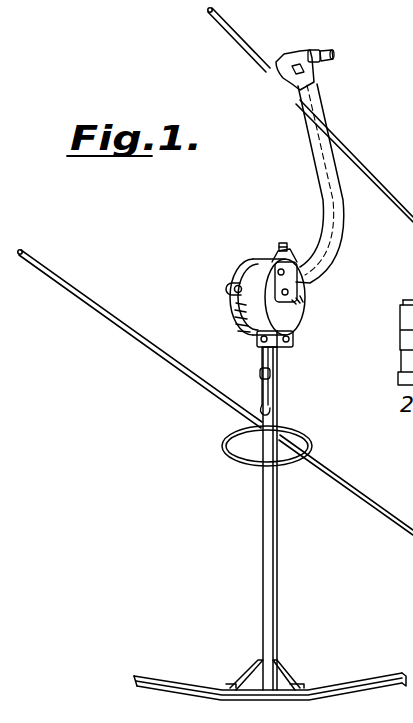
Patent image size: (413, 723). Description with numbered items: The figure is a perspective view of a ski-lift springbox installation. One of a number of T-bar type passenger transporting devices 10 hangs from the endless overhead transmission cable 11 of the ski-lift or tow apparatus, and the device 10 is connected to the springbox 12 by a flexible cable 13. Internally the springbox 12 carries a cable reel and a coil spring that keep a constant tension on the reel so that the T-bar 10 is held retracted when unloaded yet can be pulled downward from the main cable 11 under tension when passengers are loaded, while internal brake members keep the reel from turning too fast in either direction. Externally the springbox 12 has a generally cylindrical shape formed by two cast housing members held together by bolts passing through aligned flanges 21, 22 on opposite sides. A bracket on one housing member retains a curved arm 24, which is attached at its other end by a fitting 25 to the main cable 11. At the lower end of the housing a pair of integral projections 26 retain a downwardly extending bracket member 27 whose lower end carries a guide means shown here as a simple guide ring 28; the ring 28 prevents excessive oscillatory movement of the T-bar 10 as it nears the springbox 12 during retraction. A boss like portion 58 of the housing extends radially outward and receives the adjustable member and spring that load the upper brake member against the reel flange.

The passenger transporting device 10 is at (278, 590).
The transmission cable 11 is at (372, 164).
The springbox 12 is at (305, 317).
The flexible cable 13 is at (262, 366).
The flange 21 is at (402, 334).
The flange 22 is at (404, 358).
The curved arm 24 is at (340, 210).
The fitting 25 is at (274, 62).
The integral projections 26 is at (258, 347).
The bracket member 27 is at (298, 510).
The guide ring 28 is at (224, 446).
The boss like portion 58 is at (273, 254).